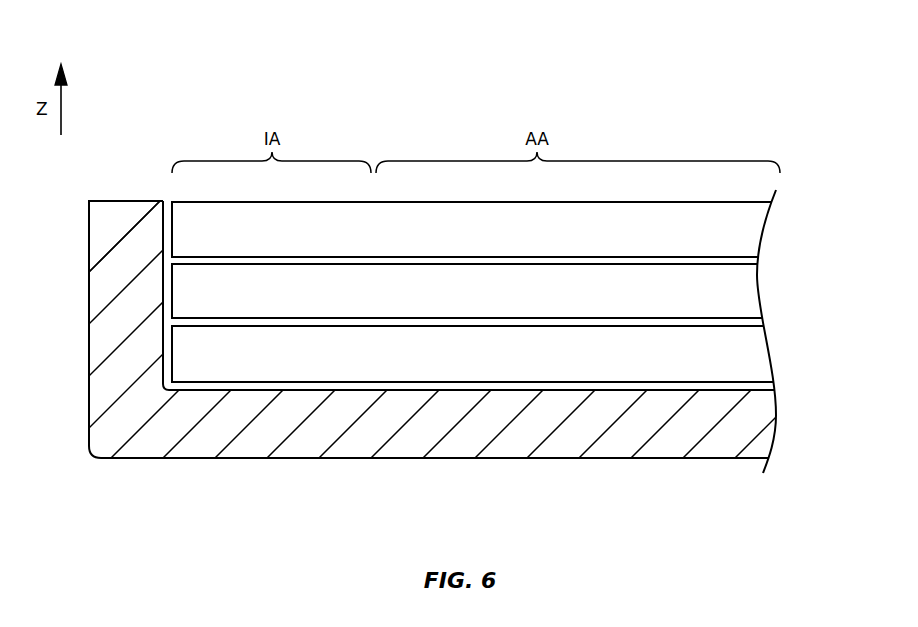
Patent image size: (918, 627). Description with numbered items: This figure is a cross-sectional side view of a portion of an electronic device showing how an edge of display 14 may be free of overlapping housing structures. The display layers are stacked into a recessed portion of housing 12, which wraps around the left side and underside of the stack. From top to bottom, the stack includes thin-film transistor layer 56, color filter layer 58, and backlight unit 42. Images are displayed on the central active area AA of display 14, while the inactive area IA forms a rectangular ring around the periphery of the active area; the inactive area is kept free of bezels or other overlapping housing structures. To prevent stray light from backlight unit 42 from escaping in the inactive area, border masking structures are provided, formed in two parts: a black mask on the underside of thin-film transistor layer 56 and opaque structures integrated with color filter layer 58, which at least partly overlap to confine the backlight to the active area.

The display 14 is at (645, 100).
The housing 12 is at (410, 445).
The thin-film transistor layer 56 is at (740, 230).
The color filter layer 58 is at (740, 287).
The backlight unit 42 is at (755, 352).